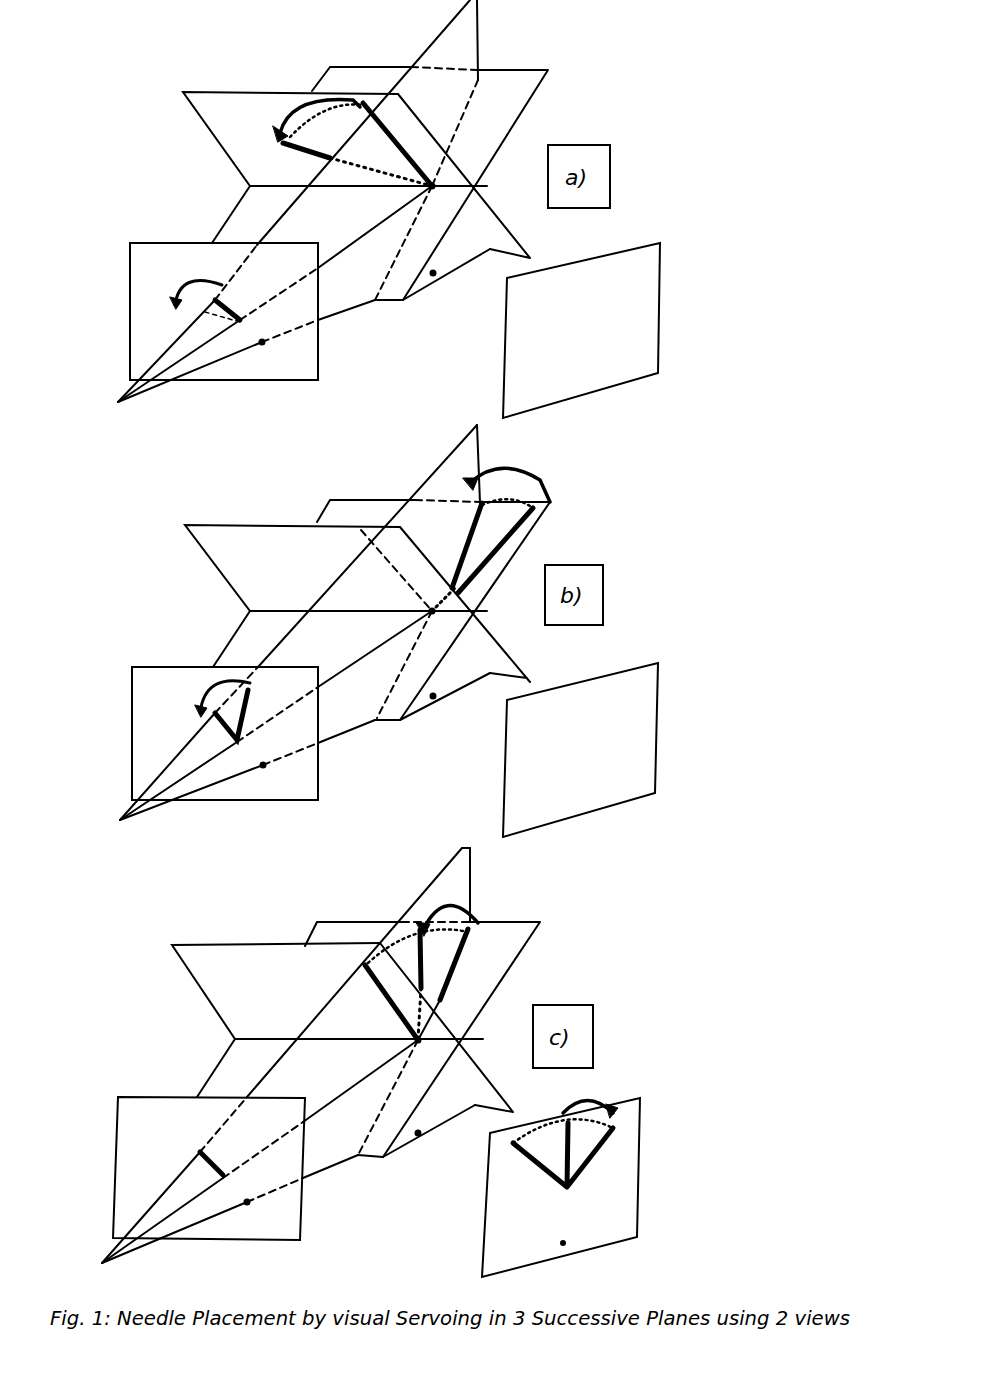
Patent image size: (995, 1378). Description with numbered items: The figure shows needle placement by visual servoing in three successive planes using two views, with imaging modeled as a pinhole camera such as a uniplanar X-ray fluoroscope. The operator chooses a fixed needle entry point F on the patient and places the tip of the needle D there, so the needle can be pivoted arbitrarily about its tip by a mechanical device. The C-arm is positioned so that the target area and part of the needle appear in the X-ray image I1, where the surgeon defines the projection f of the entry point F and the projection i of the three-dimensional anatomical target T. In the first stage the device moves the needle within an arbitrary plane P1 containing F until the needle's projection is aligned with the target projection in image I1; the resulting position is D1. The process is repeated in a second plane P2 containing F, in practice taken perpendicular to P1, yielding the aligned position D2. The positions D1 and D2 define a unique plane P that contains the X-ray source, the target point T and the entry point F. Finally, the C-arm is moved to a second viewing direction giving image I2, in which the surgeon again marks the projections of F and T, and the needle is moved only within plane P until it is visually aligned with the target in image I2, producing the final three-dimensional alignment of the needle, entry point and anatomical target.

The plane containing X-ray source, target and entry point P is at (444, 578).
The first needle plane P1 is at (329, 594).
The second needle plane P2 is at (427, 612).
The final needle position in first plane D1 is at (352, 569).
The needle position in second plane D2 is at (423, 565).
The needle D is at (499, 530).
The needle entry point F is at (406, 670).
The 3D anatomical target T is at (436, 703).
The first X-ray image I1 is at (215, 741).
The second X-ray image I2 is at (571, 760).
The projection of needle entry point f is at (367, 763).
The projection of target i is at (256, 783).